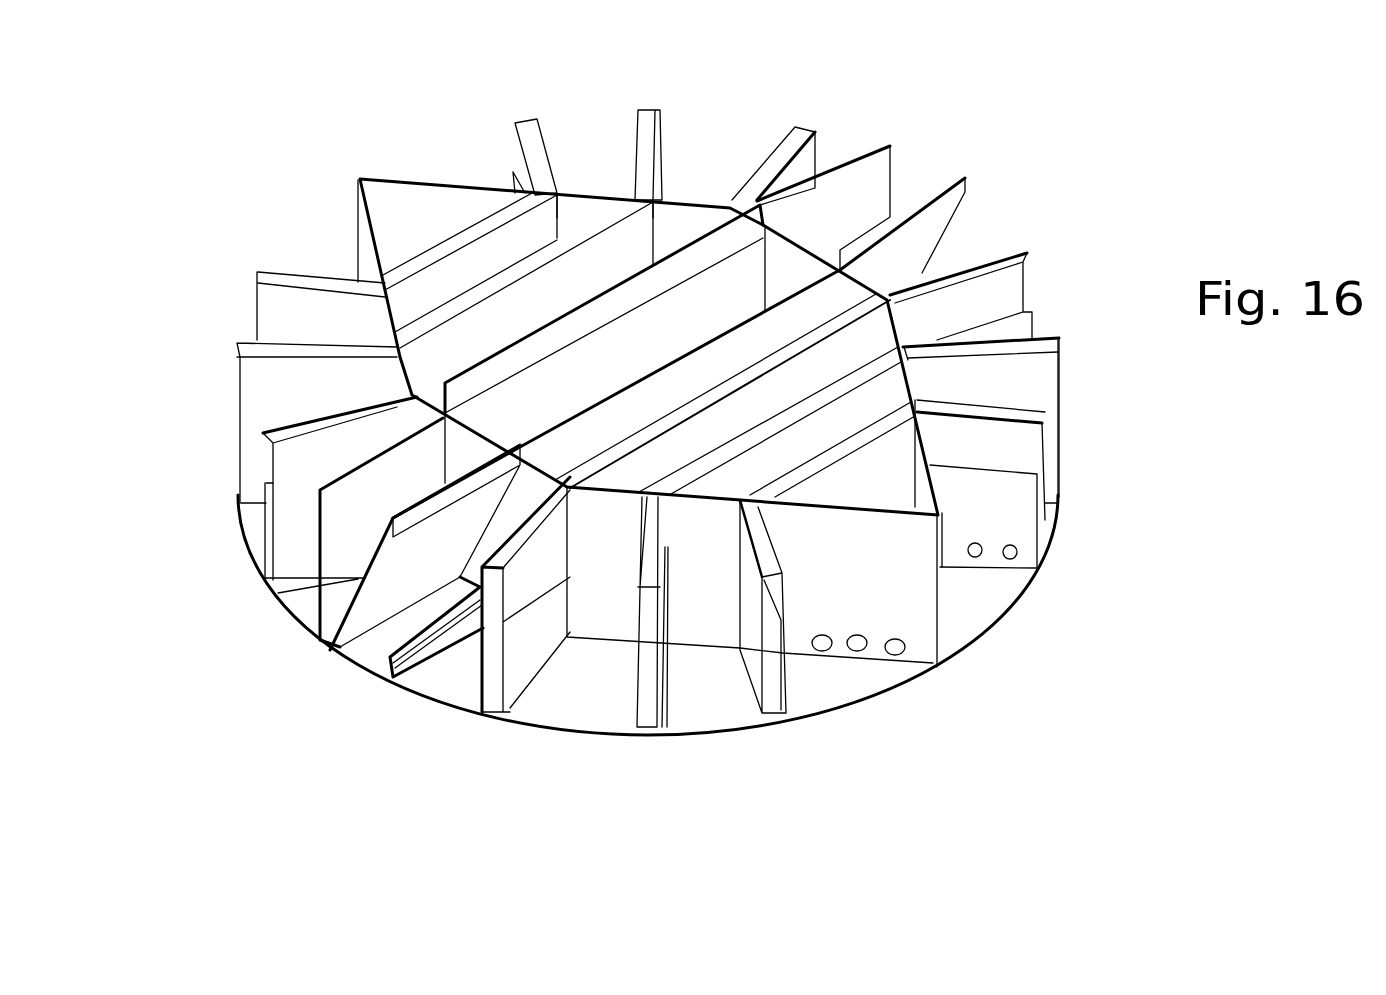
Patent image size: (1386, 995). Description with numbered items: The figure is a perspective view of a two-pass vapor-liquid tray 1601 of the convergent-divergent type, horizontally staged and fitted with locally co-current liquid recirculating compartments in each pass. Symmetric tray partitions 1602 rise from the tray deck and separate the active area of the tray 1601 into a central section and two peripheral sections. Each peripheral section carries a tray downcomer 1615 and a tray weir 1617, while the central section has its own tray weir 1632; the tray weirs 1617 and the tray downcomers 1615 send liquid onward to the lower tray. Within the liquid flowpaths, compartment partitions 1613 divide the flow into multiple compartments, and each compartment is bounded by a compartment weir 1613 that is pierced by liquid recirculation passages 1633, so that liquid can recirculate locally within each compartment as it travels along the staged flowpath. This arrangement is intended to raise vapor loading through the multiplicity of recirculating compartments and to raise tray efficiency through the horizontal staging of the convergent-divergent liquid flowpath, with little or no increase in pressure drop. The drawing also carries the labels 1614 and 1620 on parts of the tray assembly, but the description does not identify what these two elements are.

The tray 1601 is at (567, 732).
The tray partitions 1602 is at (876, 166).
The compartment partitions 1613 is at (731, 732).
The fin 1614 is at (786, 692).
The tray downcomers 1615 is at (943, 237).
The tray weirs 1617 is at (966, 180).
The holes 1620 is at (902, 650).
The central section tray weir 1632 is at (700, 233).
The liquid recirculation passages 1633 is at (1018, 556).